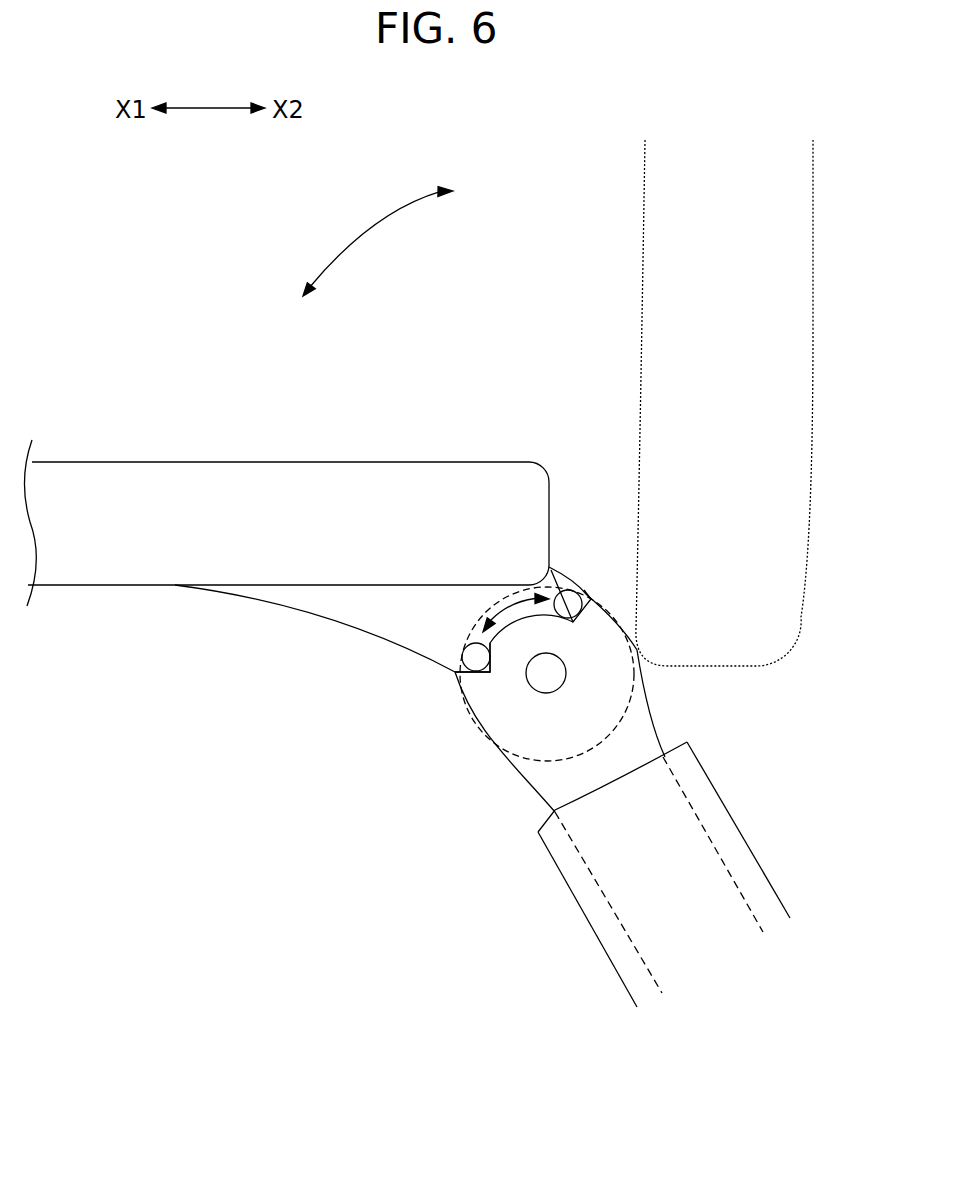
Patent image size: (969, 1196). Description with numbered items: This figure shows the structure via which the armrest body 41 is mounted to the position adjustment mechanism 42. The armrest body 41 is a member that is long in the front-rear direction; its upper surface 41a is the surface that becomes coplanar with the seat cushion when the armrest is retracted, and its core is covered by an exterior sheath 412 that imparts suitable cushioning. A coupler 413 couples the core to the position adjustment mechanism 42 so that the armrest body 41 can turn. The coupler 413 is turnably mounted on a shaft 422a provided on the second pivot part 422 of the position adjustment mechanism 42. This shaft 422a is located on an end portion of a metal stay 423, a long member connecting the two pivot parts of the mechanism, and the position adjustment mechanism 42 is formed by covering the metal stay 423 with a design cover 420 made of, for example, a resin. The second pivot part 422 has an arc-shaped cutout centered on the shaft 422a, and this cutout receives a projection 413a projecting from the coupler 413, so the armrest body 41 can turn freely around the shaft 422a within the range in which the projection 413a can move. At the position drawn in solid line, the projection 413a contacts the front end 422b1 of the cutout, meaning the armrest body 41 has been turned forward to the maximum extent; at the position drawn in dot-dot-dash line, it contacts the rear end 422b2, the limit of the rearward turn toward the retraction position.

The armrest body 41 is at (182, 428).
The upper surface of the armrest body 41a is at (90, 462).
The exterior sheath 412 is at (380, 472).
The coupler 413 is at (317, 617).
The projection 413a is at (577, 582).
The position adjustment mechanism 42 is at (572, 985).
The design cover 420 is at (755, 853).
The second pivot part 422 is at (457, 751).
The shaft 422a is at (566, 673).
The front end of the cutout 422b1 is at (465, 668).
The rear end of the cutout 422b2 is at (578, 591).
The metal stay 423 is at (542, 798).